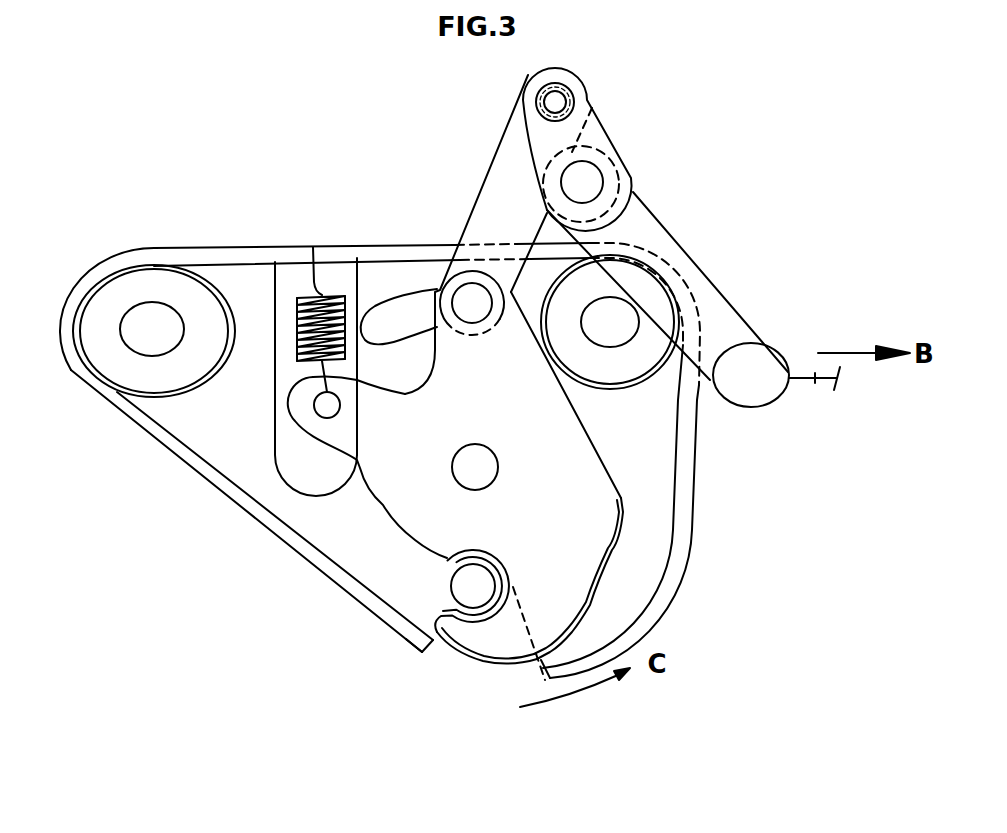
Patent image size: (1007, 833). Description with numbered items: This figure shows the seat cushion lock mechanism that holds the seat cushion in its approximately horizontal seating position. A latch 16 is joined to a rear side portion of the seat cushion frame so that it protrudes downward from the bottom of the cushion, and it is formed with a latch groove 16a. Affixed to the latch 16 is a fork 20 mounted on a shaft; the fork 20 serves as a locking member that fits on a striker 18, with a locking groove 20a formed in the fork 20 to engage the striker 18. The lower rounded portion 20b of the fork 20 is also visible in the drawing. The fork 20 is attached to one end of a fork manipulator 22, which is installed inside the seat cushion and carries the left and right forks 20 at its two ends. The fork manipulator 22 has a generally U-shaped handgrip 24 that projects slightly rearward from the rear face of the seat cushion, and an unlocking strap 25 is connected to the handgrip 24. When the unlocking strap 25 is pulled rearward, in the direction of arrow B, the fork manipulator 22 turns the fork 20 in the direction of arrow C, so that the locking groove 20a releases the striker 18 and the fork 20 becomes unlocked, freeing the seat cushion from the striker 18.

The latch 16 is at (267, 490).
The latch groove 16a is at (442, 657).
The striker 18 is at (447, 573).
The fork 20 is at (582, 495).
The locking groove 20a is at (405, 595).
The rounded end portion 20b is at (478, 665).
The fork manipulator 22 is at (507, 165).
The handgrip 24 is at (735, 325).
The unlocking strap 25 is at (815, 387).